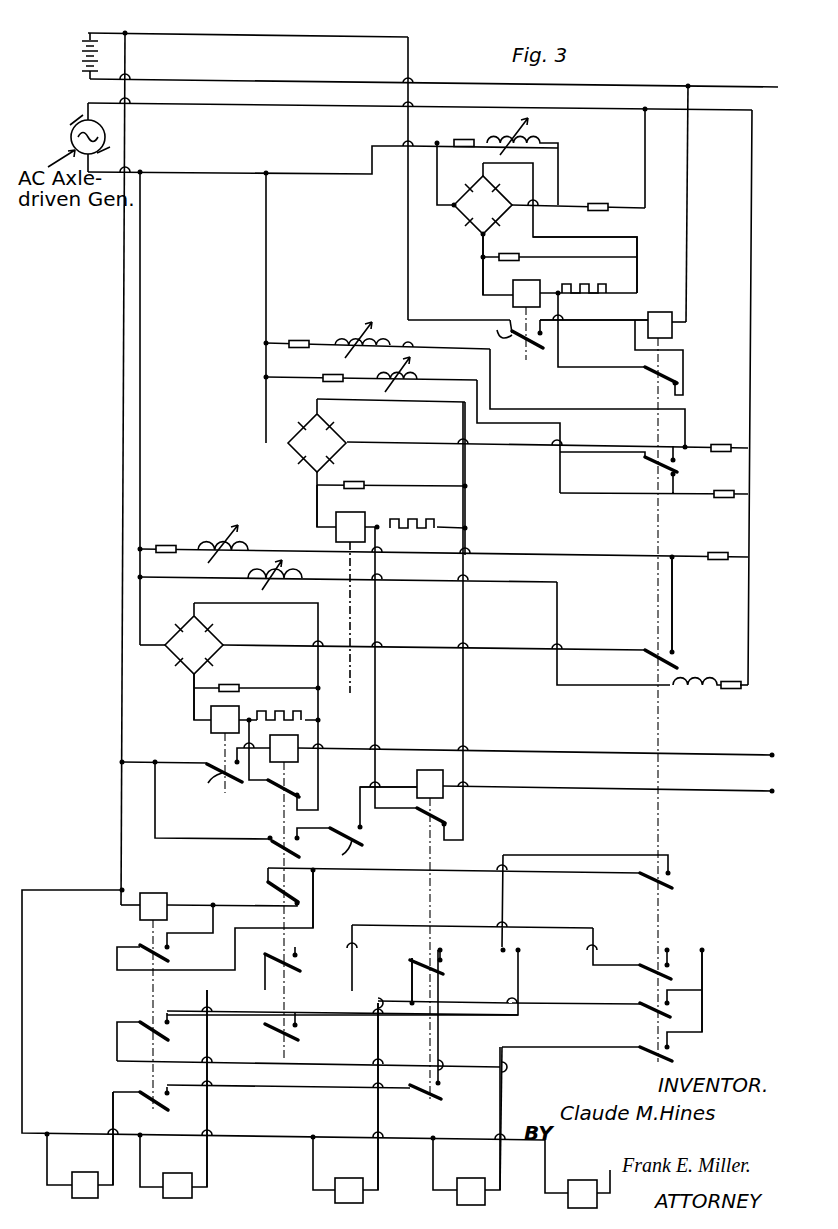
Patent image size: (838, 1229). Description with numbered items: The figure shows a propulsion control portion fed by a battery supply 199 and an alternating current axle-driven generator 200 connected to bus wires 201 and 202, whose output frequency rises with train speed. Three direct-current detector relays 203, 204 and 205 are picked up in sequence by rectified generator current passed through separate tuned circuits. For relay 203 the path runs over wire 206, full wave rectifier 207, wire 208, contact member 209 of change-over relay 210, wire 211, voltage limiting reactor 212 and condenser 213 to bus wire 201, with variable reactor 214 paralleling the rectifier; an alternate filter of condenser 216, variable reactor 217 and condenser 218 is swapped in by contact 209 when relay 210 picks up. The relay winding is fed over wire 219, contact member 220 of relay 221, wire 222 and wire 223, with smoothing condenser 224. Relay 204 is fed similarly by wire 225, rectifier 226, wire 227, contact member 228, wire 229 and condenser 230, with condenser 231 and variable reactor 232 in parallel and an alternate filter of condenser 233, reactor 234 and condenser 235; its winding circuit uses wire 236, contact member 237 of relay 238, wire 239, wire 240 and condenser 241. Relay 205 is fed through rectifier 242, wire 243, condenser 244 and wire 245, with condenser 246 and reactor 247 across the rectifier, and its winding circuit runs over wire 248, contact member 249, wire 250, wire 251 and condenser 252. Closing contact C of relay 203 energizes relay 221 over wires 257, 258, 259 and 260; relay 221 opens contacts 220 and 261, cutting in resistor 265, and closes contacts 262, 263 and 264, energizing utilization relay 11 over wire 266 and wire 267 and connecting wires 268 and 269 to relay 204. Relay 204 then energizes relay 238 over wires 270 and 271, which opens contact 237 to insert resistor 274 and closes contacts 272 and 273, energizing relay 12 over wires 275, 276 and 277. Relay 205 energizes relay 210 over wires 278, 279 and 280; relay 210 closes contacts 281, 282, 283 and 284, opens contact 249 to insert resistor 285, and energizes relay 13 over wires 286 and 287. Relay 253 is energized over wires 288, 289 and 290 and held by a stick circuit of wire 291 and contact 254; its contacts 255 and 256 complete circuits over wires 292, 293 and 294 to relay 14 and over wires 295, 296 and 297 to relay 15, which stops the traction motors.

The battery supply 199 is at (84, 48).
The alternating current axle-driven generator 200 is at (71, 137).
The bus wire 201 is at (166, 102).
The bus wire 202 is at (183, 173).
The detector relay 203 is at (222, 722).
The detector relay 204 is at (336, 536).
The detector relay 205 is at (512, 297).
The wire 206 is at (140, 420).
The full wave rectifier 207 is at (172, 662).
The wire 208 is at (355, 643).
The contact member 209 is at (655, 668).
The change-over relay 210 is at (672, 330).
The wire 211 is at (678, 670).
The voltage limiting reactor 212 is at (695, 692).
The condenser 213 is at (727, 697).
The variable reactor 214 is at (277, 585).
The condenser 216 is at (168, 545).
The variable reactor 217 is at (210, 525).
The condenser 218 is at (733, 562).
The wire 219 is at (240, 602).
The contact member 220 is at (283, 800).
The relay 221 is at (285, 746).
The wire 222 is at (232, 787).
The wire 223 is at (194, 705).
The condenser 224 is at (228, 682).
The wire 225 is at (266, 270).
The full wave rectifier 226 is at (300, 462).
The wire 227 is at (531, 448).
The contact member 228 is at (655, 470).
The wire 229 is at (560, 483).
The condenser 230 is at (733, 480).
The condenser 231 is at (325, 375).
The variable reactor 232 is at (408, 368).
The condenser 233 is at (733, 445).
The variable reactor 234 is at (346, 332).
The condenser 235 is at (302, 333).
The wire 236 is at (465, 478).
The contact member 237 is at (430, 820).
The relay 238 is at (428, 770).
The wire 239 is at (375, 723).
The wire 240 is at (317, 498).
The condenser 241 is at (343, 480).
The full wave rectifier 242 is at (472, 230).
The wire 243 is at (545, 210).
The condenser 244 is at (596, 203).
The wire 245 is at (645, 176).
The condenser 246 is at (464, 140).
The variable reactor 247 is at (532, 127).
The wire 248 is at (630, 240).
The contact member 249 is at (660, 383).
The wire 250 is at (590, 370).
The wire 251 is at (483, 282).
The condenser 252 is at (500, 254).
The relay 253 is at (168, 883).
The contact member 254 is at (168, 958).
The contact member 255 is at (155, 1030).
The contact member 256 is at (152, 1100).
The wire 257 is at (123, 360).
The wire 258 is at (147, 757).
The wire 259 is at (547, 740).
The wire 260 is at (476, 87).
The contact member 261 is at (280, 890).
The contact member 262 is at (300, 970).
The contact member 263 is at (283, 1038).
The contact member 264 is at (284, 853).
The resistor 265 is at (258, 712).
The wire 266 is at (207, 1032).
The wire 267 is at (22, 1015).
The wire 268 is at (155, 822).
The wire 269 is at (338, 816).
The wire 270 is at (357, 788).
The wire 271 is at (604, 788).
The contact member 272 is at (412, 958).
The contact member 273 is at (434, 1098).
The resistor 274 is at (436, 522).
The wire 275 is at (445, 960).
The wire 276 is at (412, 990).
The wire 277 is at (378, 1037).
The wire 278 is at (233, 45).
The wire 279 is at (648, 312).
The wire 280 is at (688, 198).
The contact member 281 is at (668, 888).
The contact member 282 is at (657, 975).
The contact member 283 is at (655, 1015).
The contact member 284 is at (658, 1056).
The resistor 285 is at (565, 284).
The wire 286 is at (703, 1010).
The wire 287 is at (500, 1110).
The wire 288 is at (503, 905).
The wire 289 is at (438, 874).
The wire 290 is at (190, 906).
The wire 291 is at (313, 922).
The wire 292 is at (495, 995).
The wire 293 is at (198, 1010).
The wire 294 is at (117, 1057).
The wire 295 is at (438, 1048).
The wire 296 is at (322, 1088).
The wire 297 is at (113, 1117).
The utilization relay 11 is at (182, 1172).
The utilization relay 12 is at (356, 1160).
The utilization relay 13 is at (477, 1176).
The utilization relay 14 is at (560, 1187).
The utilization relay 15 is at (95, 1157).